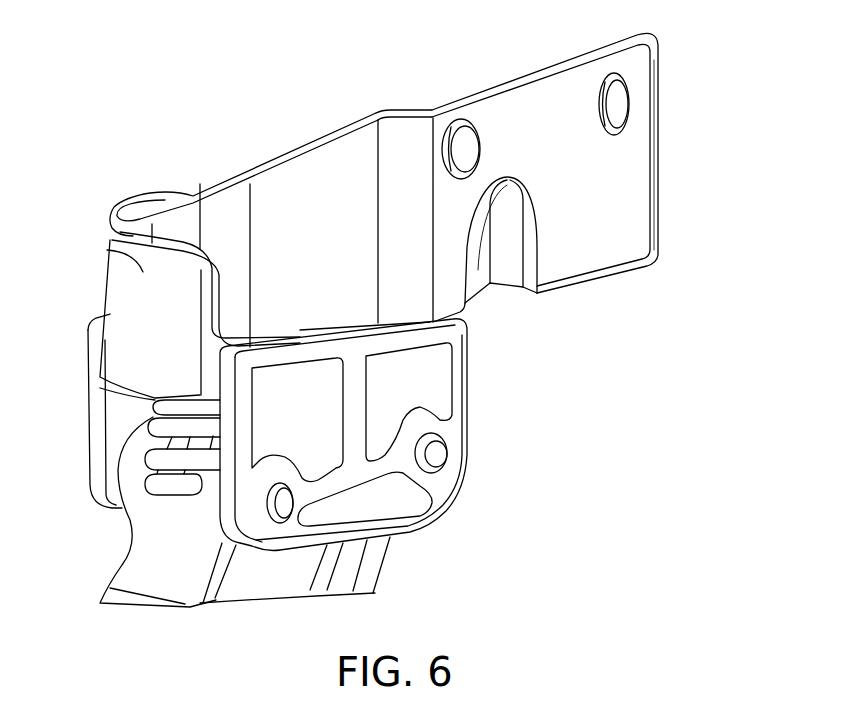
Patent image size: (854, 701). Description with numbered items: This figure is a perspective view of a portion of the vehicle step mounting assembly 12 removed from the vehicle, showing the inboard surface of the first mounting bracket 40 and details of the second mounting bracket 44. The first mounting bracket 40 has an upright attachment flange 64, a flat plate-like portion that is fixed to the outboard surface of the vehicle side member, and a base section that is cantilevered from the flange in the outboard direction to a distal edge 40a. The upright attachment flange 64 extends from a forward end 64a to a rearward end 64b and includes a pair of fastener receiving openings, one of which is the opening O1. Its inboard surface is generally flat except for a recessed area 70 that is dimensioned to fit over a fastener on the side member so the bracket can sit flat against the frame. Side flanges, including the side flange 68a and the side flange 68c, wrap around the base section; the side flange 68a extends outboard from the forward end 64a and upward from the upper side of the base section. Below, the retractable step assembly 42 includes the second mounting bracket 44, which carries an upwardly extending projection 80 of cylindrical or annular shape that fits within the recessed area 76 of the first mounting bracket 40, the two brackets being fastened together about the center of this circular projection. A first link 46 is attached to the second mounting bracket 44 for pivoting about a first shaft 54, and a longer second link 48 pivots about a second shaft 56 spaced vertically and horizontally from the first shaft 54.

The vehicle step mounting assembly 12 is at (212, 104).
The first mounting bracket 40 is at (536, 60).
The distal edge 40a is at (128, 205).
The retractable step assembly 42 is at (426, 540).
The second mounting bracket 44 is at (480, 394).
The first link 46 is at (372, 565).
The second link 48 is at (160, 572).
The first shaft 54 is at (437, 452).
The second shaft 56 is at (283, 505).
The upright attachment flange 64 is at (605, 178).
The forward end 64a is at (659, 210).
The rearward end 64b is at (409, 138).
The side flange 68a is at (296, 145).
The side flange 68c is at (273, 305).
The recessed area 70 is at (506, 213).
The recessed area 76 is at (133, 258).
The upwardly extending projection 80 is at (140, 288).
The fastener receiving opening O1 is at (471, 150).